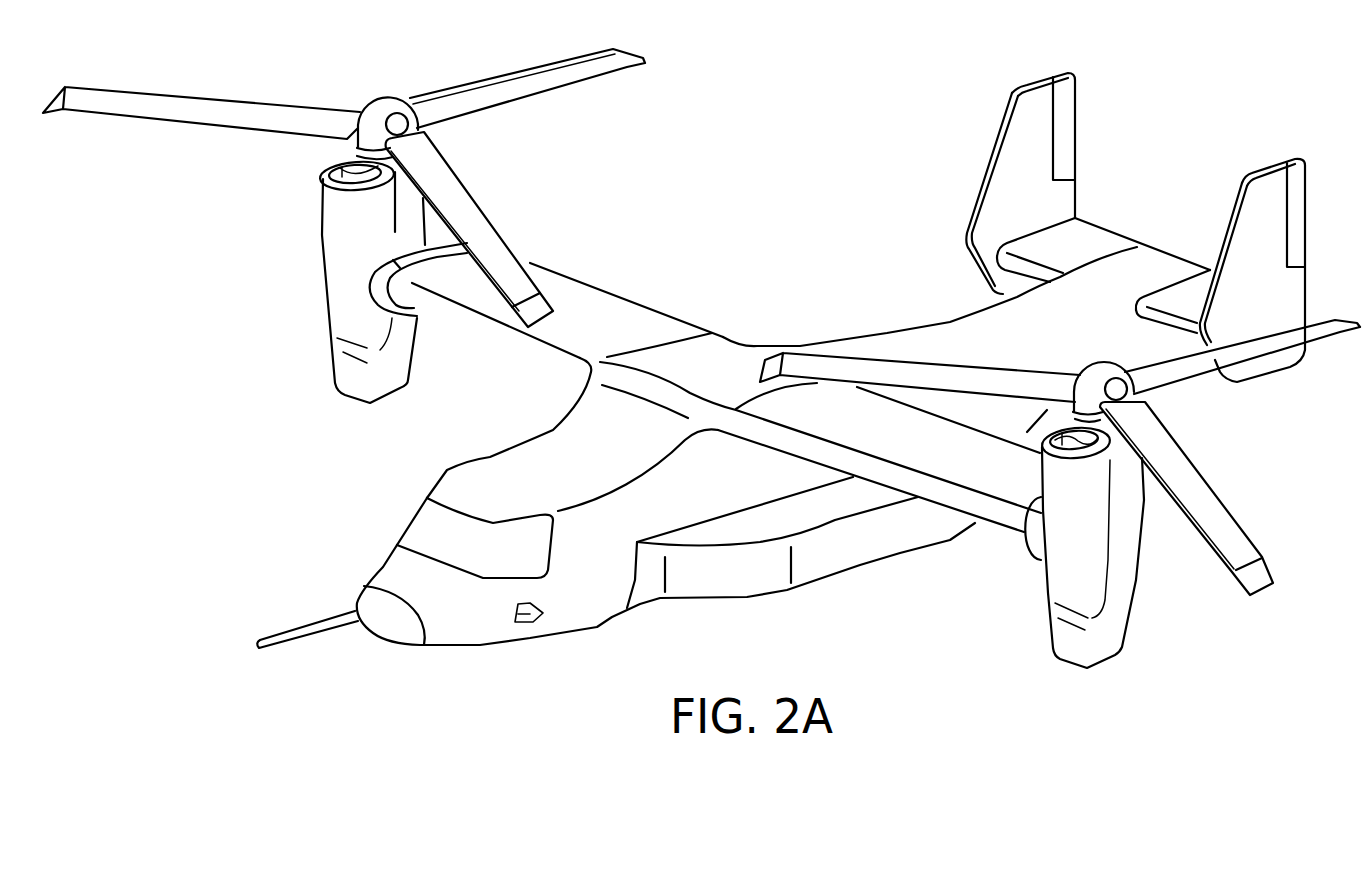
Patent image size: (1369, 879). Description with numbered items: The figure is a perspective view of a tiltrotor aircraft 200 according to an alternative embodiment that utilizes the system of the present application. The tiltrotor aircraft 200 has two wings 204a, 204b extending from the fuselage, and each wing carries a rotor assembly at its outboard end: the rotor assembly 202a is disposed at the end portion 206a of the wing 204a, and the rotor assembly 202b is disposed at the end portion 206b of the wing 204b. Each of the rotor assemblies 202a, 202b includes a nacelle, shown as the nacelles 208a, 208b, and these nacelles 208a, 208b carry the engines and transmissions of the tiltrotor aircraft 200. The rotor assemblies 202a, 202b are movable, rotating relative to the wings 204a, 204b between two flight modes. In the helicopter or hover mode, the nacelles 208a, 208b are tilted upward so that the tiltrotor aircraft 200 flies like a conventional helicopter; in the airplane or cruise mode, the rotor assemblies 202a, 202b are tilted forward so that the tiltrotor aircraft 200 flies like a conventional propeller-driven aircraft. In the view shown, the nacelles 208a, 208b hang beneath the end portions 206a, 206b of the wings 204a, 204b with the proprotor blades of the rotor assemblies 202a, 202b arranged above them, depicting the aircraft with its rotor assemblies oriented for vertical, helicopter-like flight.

The tiltrotor aircraft 200 is at (1141, 72).
The rotor assembly 202a is at (288, 186).
The rotor assembly 202b is at (1232, 452).
The wing 204a is at (612, 305).
The wing 204b is at (883, 481).
The end portion 206a is at (360, 260).
The end portion 206b is at (1018, 573).
The nacelle 208a is at (328, 312).
The nacelle 208b is at (1135, 604).